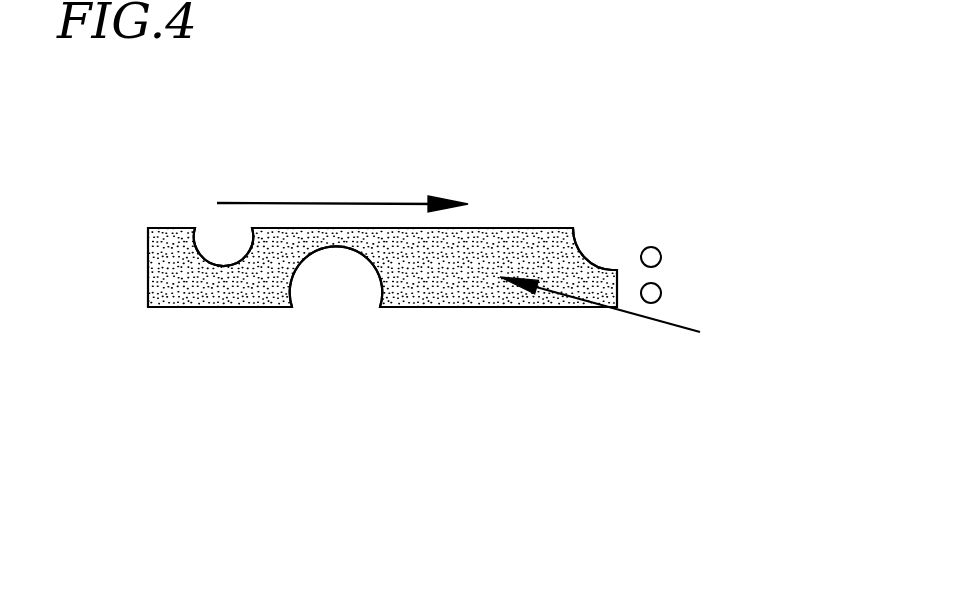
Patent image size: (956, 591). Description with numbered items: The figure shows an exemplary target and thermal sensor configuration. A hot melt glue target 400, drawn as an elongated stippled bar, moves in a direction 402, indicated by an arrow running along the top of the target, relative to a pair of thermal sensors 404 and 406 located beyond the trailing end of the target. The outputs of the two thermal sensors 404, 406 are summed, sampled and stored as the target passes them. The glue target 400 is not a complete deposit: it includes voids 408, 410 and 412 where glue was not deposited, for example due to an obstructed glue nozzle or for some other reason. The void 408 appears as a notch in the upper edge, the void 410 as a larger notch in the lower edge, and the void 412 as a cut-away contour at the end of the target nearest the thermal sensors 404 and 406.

The hot melt glue target 400 is at (218, 296).
The direction 402 is at (320, 200).
The thermal sensor 404 is at (662, 257).
The thermal sensor 406 is at (662, 293).
The void 408 is at (218, 232).
The void 410 is at (327, 295).
The void 412 is at (590, 257).